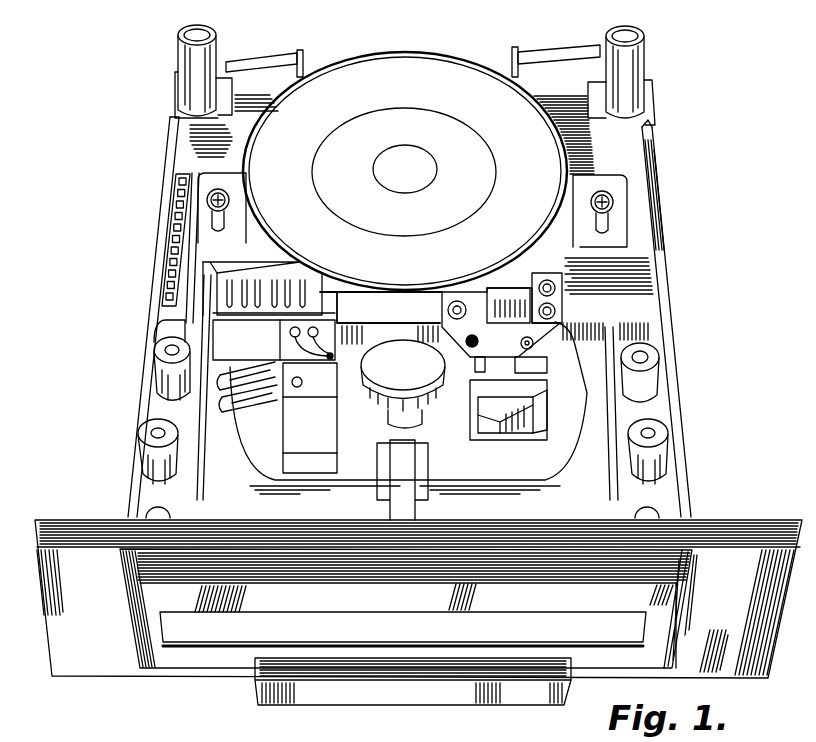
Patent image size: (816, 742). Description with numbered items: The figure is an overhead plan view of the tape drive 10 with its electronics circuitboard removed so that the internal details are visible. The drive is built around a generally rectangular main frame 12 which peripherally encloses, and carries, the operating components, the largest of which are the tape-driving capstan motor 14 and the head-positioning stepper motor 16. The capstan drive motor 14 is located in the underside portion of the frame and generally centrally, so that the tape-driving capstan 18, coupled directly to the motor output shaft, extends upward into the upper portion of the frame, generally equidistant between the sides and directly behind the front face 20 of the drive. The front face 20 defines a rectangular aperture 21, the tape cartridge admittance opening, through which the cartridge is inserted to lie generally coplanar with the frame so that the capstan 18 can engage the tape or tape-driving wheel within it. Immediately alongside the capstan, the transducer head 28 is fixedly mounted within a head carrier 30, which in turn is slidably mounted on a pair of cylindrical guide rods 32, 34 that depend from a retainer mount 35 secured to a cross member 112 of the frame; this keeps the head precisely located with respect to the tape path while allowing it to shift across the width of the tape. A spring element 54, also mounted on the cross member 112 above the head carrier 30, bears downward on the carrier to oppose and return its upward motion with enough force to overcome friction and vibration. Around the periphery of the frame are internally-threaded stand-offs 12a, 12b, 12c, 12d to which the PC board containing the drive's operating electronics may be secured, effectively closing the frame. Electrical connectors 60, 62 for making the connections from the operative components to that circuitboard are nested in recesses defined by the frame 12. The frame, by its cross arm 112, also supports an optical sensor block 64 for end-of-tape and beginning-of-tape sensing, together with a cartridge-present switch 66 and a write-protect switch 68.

The tape drive 10 is at (712, 150).
The main frame 12 is at (152, 352).
The stand-off 12a is at (148, 443).
The stand-off 12b is at (200, 37).
The stand-off 12c is at (620, 33).
The stand-off 12d is at (655, 440).
The capstan drive motor 14 is at (462, 465).
The head-positioning stepper motor 16 is at (403, 80).
The tape-driving capstan 18 is at (414, 375).
The front face 20 is at (140, 645).
The rectangular aperture 21 is at (623, 628).
The transducer head 28 is at (513, 438).
The head carrier 30 is at (528, 413).
The guide rod 32 is at (478, 358).
The guide rod 34 is at (525, 367).
The retainer mount 35 is at (563, 313).
The spring element 54 is at (507, 288).
The electrical connector 60 is at (176, 190).
The electrical connector 62 is at (276, 275).
The optical sensor block 64 is at (318, 433).
The cartridge-present switch 66 is at (274, 337).
The write-protect switch 68 is at (240, 405).
The cross member 112 is at (380, 316).